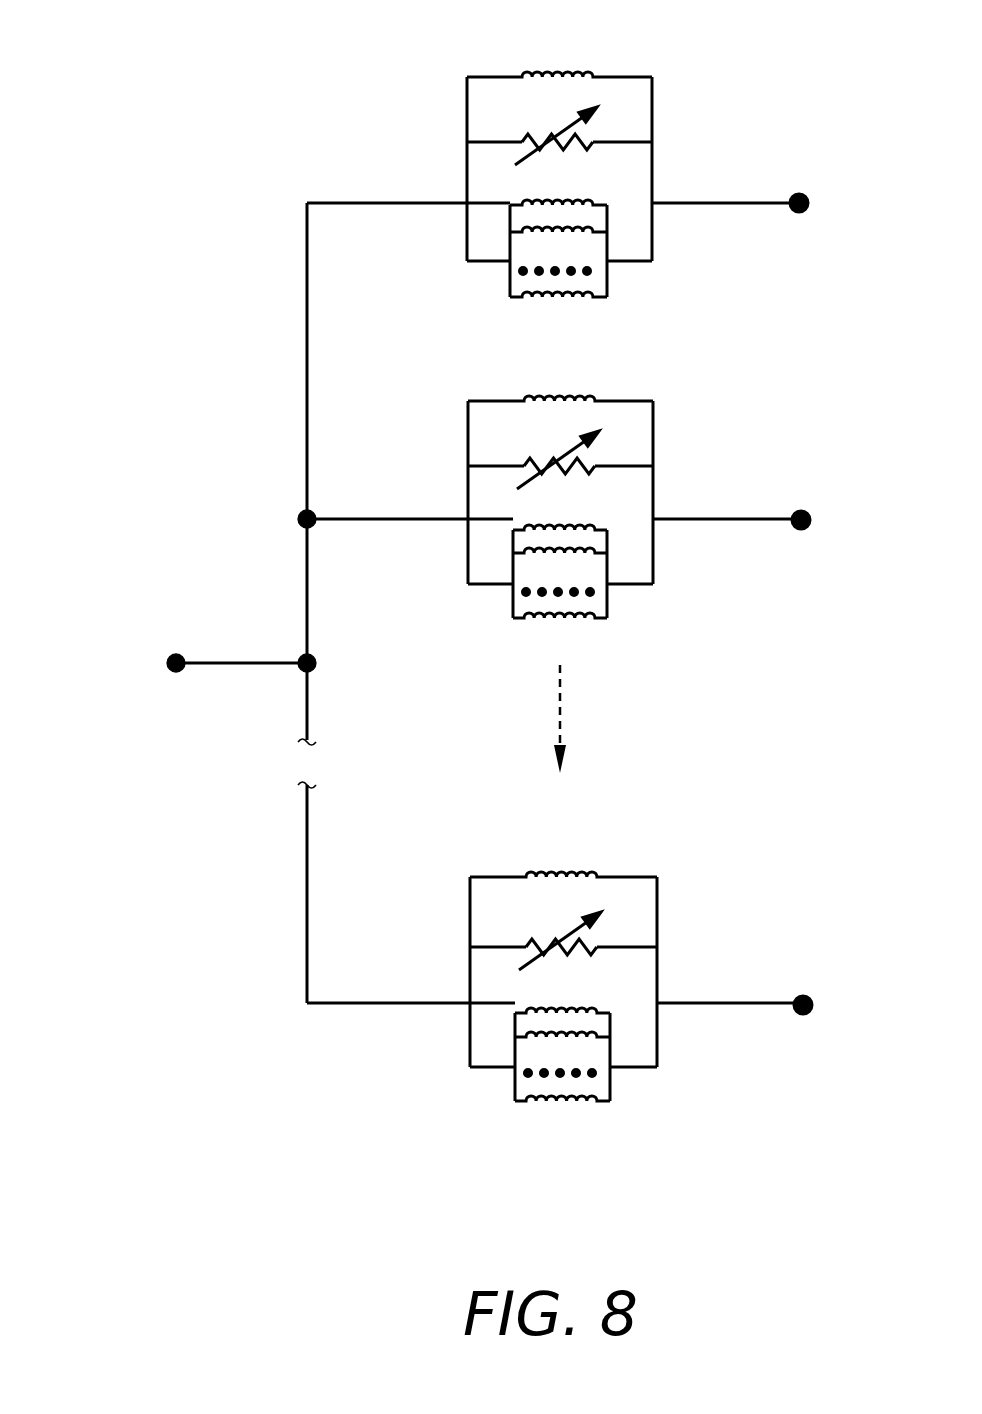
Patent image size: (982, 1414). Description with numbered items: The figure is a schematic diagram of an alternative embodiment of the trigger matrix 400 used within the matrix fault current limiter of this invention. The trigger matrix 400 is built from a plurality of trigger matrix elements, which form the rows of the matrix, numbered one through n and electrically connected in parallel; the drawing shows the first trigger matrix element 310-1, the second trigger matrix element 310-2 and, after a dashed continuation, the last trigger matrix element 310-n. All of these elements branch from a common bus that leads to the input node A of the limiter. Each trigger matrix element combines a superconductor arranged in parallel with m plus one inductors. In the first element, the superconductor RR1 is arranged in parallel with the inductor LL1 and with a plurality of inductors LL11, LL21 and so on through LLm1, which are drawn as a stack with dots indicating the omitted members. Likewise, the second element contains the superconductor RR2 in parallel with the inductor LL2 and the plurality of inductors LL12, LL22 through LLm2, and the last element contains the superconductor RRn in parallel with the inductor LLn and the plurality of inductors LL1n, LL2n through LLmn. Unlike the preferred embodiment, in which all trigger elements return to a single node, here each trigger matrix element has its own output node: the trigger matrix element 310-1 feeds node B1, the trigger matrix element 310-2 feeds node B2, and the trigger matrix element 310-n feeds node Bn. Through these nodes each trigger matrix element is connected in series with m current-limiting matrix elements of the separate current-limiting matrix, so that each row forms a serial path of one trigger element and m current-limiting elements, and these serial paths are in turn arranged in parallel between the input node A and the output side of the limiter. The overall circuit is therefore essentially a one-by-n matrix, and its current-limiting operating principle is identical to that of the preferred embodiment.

The trigger matrix 400 is at (152, 118).
The trigger matrix element 310-1 is at (435, 152).
The trigger matrix element 310-2 is at (447, 461).
The trigger matrix element 310-n is at (448, 928).
The node A is at (174, 640).
The node B1 is at (739, 186).
The node B2 is at (739, 499).
The node Bn is at (743, 986).
The inductor LL1 is at (547, 68).
The superconductor RR1 is at (590, 135).
The inductor LL11 is at (587, 195).
The inductor LL21 is at (533, 240).
The inductor LLm1 is at (532, 298).
The inductor LL2 is at (550, 392).
The superconductor RR2 is at (590, 458).
The inductor LL12 is at (587, 518).
The inductor LL22 is at (533, 561).
The inductor LLm2 is at (532, 621).
The inductor LLn is at (552, 868).
The superconductor RRn is at (594, 938).
The inductor LL1n is at (590, 1000).
The inductor LL2n is at (537, 1043).
The inductor LLmn is at (535, 1101).